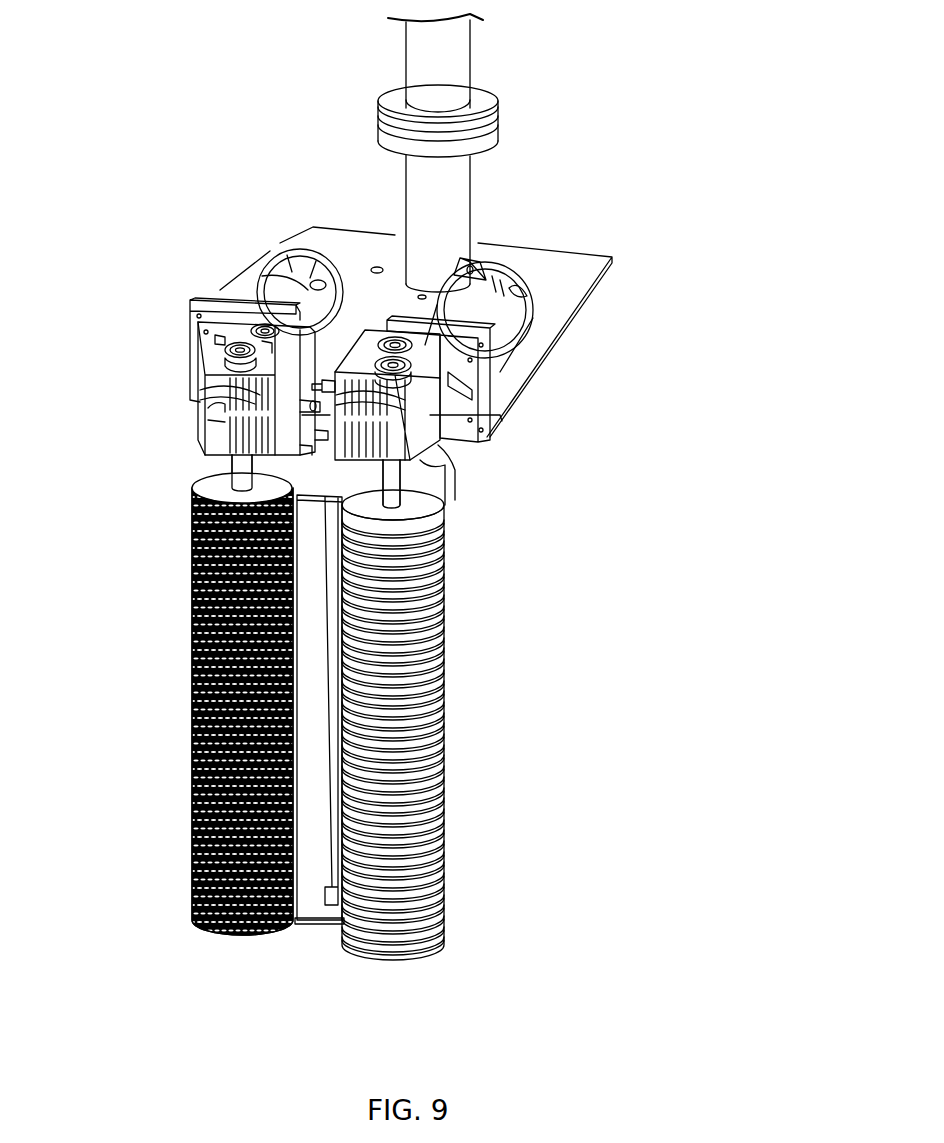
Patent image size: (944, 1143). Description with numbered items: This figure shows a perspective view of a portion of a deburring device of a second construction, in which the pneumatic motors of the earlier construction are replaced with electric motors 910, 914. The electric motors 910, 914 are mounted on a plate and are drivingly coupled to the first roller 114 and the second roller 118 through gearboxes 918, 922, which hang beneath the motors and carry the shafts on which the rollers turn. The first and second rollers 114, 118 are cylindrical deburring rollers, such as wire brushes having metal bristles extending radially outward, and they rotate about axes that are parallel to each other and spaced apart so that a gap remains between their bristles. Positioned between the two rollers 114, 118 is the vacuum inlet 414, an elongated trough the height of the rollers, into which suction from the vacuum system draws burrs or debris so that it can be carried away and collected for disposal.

The electric motor 910 is at (507, 323).
The electric motor 914 is at (245, 291).
The gearbox 918 is at (418, 400).
The gearbox 922 is at (210, 392).
The second roller 118 is at (195, 548).
The first roller 114 is at (440, 611).
The vacuum inlet 414 is at (308, 883).